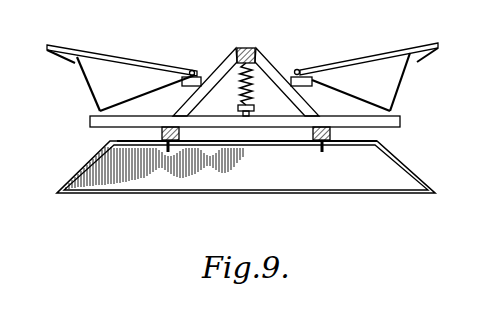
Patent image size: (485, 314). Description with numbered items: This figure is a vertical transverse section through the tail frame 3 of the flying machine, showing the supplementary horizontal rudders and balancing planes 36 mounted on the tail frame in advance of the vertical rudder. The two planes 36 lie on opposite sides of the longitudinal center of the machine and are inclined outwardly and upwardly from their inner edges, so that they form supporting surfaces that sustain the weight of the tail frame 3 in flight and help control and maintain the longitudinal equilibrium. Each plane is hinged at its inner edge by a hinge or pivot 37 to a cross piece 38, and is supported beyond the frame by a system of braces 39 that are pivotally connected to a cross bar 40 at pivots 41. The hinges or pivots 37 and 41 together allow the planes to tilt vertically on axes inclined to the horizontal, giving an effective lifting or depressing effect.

The tail frame 3 is at (246, 79).
The supplementary horizontal rudders and balancing planes 36 is at (120, 57).
The hinges or pivots 37 is at (193, 72).
The cross piece 38 is at (203, 104).
The braces 39 is at (85, 80).
The cross bar 40 is at (397, 127).
The pivots 41 is at (98, 108).